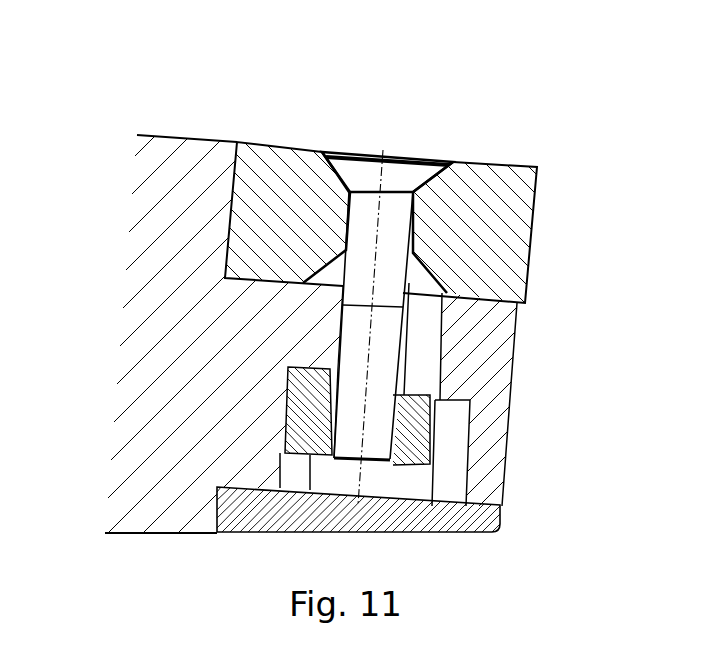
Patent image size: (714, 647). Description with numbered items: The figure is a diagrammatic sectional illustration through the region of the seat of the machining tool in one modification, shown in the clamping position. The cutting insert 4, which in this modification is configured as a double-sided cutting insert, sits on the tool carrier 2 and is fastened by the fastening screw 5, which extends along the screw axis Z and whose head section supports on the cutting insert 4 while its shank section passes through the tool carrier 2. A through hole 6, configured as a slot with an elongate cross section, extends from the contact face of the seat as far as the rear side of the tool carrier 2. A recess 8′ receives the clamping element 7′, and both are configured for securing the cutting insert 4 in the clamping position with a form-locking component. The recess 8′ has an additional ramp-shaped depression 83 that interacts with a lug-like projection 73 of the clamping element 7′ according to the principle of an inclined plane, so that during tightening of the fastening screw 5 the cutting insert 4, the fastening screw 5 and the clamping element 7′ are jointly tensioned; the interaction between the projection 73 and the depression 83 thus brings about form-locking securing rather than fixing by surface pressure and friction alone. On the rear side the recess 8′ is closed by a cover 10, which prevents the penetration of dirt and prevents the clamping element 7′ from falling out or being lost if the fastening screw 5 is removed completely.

The tool carrier 2 is at (142, 232).
The cutting insert 4 is at (510, 243).
The fastening screw 5 is at (383, 235).
The screw axis Z is at (381, 152).
The through hole 6 is at (417, 348).
The clamping element 7′ is at (410, 438).
The recess 8′ is at (322, 465).
The cover 10 is at (385, 515).
The lug-like projection 73 is at (322, 382).
The ramp-shaped depression 83 is at (297, 367).